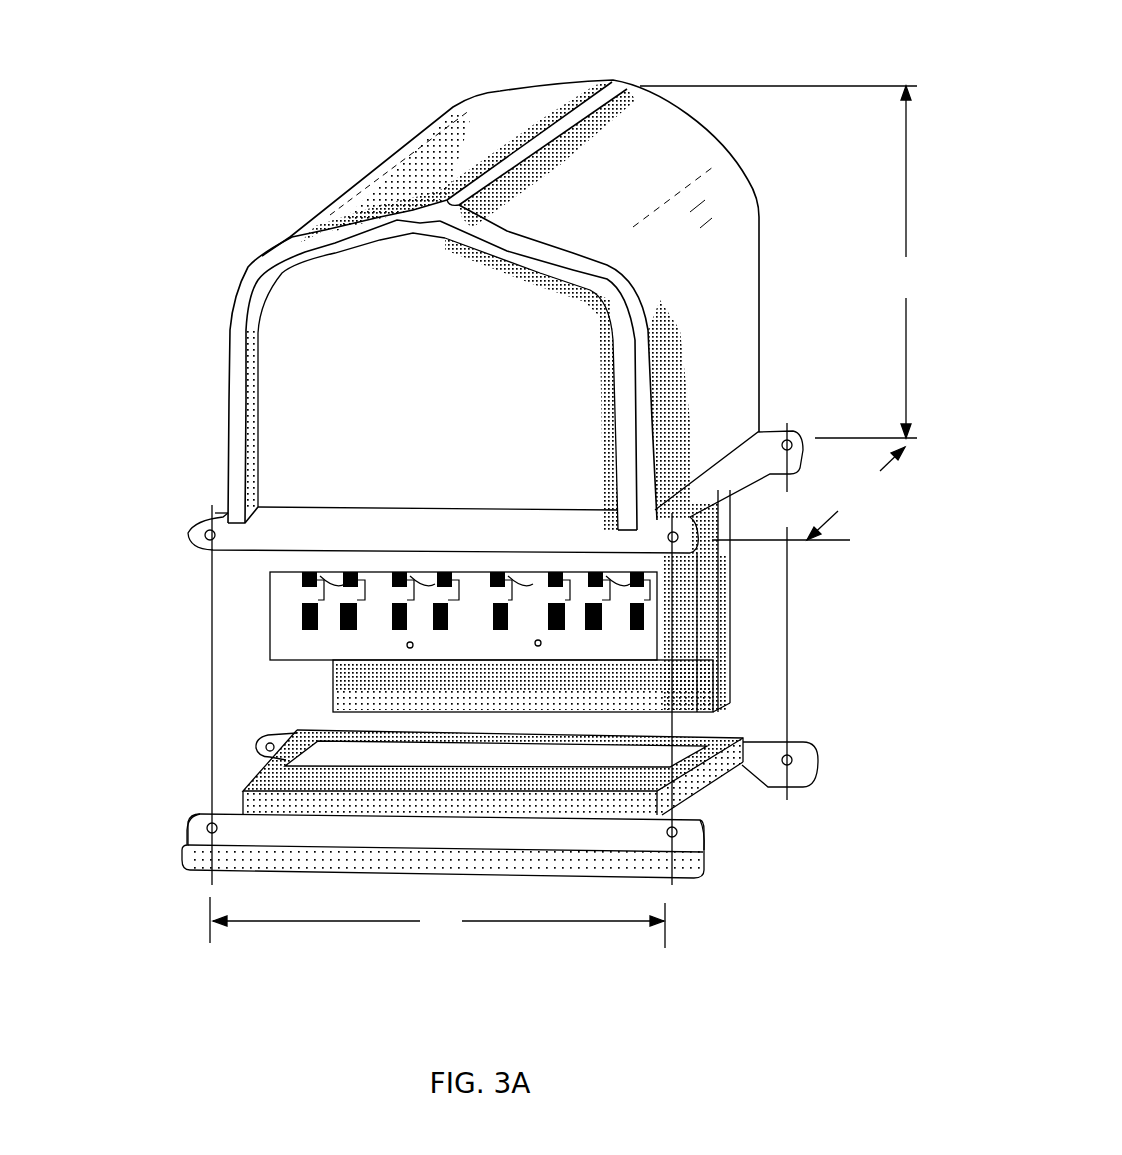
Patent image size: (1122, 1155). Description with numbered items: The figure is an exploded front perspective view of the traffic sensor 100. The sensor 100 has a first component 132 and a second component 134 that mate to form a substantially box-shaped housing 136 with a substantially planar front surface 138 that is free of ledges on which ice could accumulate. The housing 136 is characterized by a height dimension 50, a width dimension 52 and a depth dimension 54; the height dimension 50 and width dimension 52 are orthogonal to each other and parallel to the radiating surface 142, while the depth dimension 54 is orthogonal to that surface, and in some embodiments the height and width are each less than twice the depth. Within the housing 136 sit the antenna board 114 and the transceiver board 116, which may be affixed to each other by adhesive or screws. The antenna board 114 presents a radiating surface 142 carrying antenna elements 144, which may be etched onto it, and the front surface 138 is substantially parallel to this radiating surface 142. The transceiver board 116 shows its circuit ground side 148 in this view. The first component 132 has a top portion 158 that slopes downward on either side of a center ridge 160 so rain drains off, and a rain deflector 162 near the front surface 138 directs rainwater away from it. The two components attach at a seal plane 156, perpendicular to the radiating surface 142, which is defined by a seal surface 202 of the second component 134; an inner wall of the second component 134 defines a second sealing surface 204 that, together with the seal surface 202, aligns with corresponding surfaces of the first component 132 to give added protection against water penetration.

The sensor 100 is at (714, 92).
The center ridge 160 is at (597, 86).
The rain deflector 162 is at (307, 237).
The front surface 138 is at (305, 293).
The top portion 158 is at (662, 197).
The housing 136 is at (745, 265).
The first component 132 is at (712, 363).
The height dimension 50 is at (780, 262).
The depth dimension 54 is at (808, 611).
The width dimension 52 is at (441, 726).
The antenna board 114 is at (260, 592).
The antenna elements 144 is at (622, 618).
The radiating surface 142 is at (292, 636).
The transceiver board 116 is at (328, 682).
The circuit ground side 148 is at (362, 690).
The second sealing surface 204 is at (452, 803).
The seal surface 202 is at (302, 833).
The seal plane 156 is at (198, 833).
The second component 134 is at (663, 858).